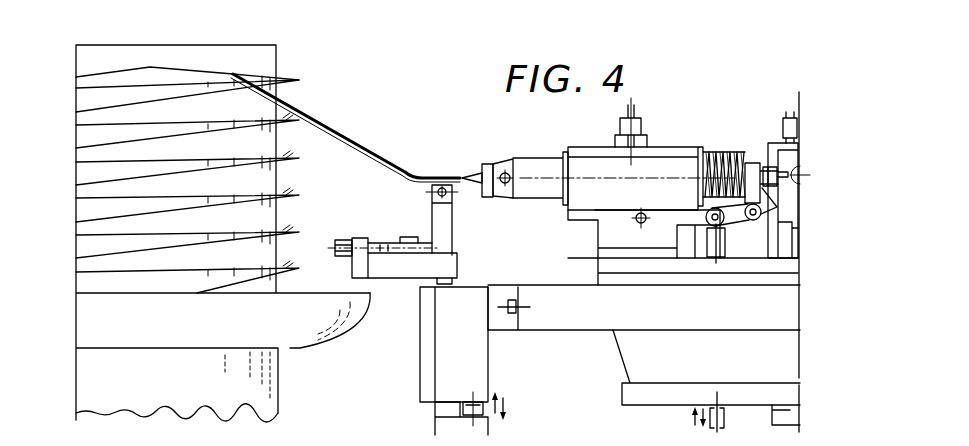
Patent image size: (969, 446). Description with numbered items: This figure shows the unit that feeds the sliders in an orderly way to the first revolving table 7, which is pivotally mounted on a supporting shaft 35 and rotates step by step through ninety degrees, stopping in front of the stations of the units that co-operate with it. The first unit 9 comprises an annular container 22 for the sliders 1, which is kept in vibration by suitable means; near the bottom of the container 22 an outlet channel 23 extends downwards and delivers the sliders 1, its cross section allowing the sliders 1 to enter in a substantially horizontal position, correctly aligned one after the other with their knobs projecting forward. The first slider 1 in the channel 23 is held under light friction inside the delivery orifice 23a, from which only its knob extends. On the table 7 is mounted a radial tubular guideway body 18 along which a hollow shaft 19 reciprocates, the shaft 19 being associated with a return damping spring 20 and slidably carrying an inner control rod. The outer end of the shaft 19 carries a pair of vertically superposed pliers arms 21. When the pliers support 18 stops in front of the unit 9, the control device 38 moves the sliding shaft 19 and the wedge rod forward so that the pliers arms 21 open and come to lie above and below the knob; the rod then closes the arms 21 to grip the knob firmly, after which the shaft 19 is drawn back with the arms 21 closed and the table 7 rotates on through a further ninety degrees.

The slider 1 is at (471, 176).
The revolving table 7 is at (552, 338).
The first unit 9 is at (383, 146).
The supporting radial tubular guideway body 18 is at (668, 165).
The hollow shaft 19 is at (527, 164).
The return damping spring 20 is at (724, 153).
The pliers arms 21 is at (488, 190).
The annular container 22 is at (257, 62).
The outlet channel 23 is at (323, 125).
The delivery orifice 23a is at (462, 176).
The supporting shaft 35 is at (771, 411).
The control device 38 is at (708, 405).